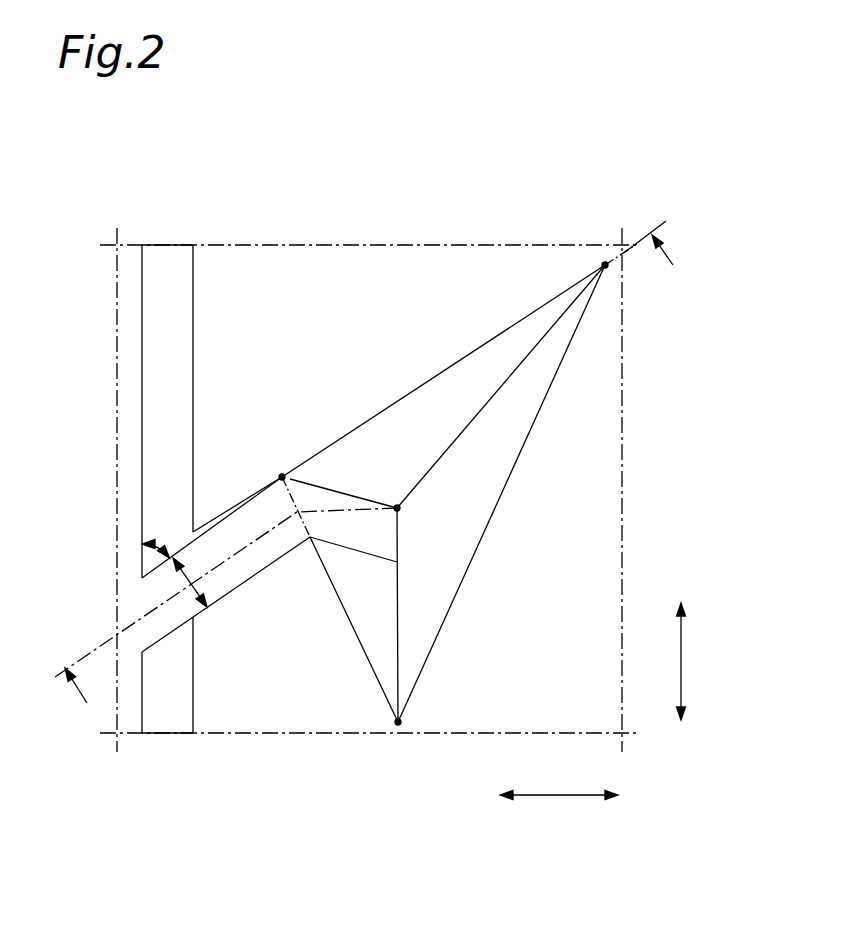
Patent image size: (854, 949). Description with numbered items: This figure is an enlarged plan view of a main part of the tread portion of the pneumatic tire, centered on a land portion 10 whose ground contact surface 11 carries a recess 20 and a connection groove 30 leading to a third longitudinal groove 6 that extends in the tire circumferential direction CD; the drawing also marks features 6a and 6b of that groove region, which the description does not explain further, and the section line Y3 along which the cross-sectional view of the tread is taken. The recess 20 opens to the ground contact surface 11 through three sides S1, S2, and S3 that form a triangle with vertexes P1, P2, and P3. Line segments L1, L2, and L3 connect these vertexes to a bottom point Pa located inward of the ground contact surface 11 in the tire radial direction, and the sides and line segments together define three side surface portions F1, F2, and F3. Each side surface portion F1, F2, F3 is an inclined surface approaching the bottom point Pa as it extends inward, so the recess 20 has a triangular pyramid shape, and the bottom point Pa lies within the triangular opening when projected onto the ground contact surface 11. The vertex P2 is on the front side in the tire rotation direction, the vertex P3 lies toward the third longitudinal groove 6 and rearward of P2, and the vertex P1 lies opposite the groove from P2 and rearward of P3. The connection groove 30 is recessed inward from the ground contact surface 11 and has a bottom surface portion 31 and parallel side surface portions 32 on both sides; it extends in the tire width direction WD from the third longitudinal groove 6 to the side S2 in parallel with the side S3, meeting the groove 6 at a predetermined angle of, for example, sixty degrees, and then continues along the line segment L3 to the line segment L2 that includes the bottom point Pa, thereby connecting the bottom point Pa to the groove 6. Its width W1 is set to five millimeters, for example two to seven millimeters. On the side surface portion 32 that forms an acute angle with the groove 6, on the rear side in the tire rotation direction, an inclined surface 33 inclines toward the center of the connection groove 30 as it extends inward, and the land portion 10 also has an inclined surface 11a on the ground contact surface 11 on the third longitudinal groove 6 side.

The third longitudinal groove 6 is at (171, 485).
The wall edge surface 6a is at (142, 373).
The wall reference line 6b is at (132, 430).
The land portion 10 is at (635, 431).
The ground contact surface 11 is at (332, 263).
The inclined surface 11a is at (178, 265).
The recess 20 is at (477, 518).
The connection groove 30 is at (222, 559).
The bottom surface portion 31 is at (157, 600).
The side surface portions 32 is at (240, 507).
The inclined surface 33 is at (222, 518).
The vertex P1 is at (607, 268).
The vertex P2 is at (397, 725).
The vertex P3 is at (271, 465).
The bottom point Pa is at (400, 508).
The line segment L1 is at (492, 398).
The line segment L2 is at (400, 670).
The line segment L3 is at (328, 485).
The side S1 is at (510, 487).
The side S2 is at (348, 617).
The side S3 is at (433, 377).
The side surface portion F1 is at (548, 360).
The side surface portion F2 is at (378, 657).
The side surface portion F3 is at (488, 358).
The width W1 is at (201, 582).
The section line Y3- Y3 is at (376, 474).
The tire circumferential direction CD is at (699, 661).
The tire width direction WD is at (559, 810).